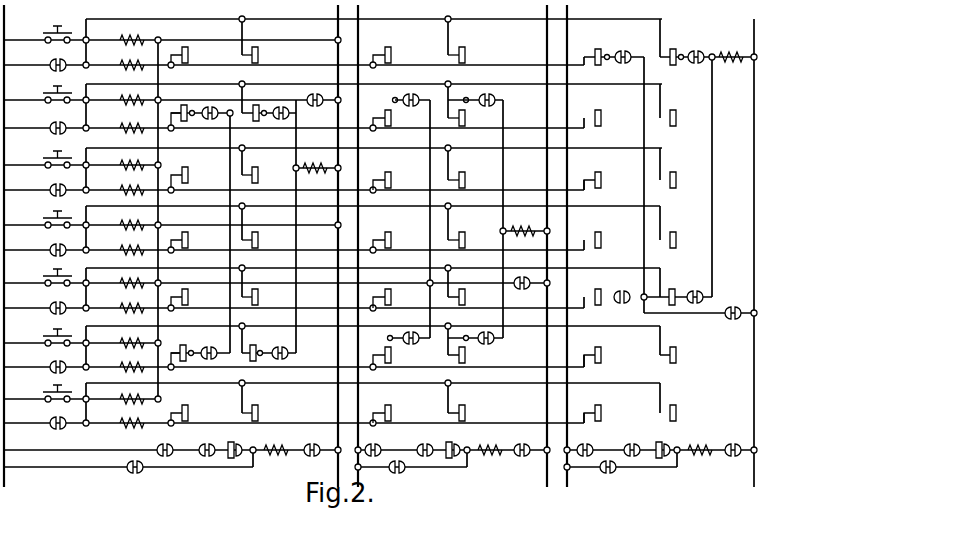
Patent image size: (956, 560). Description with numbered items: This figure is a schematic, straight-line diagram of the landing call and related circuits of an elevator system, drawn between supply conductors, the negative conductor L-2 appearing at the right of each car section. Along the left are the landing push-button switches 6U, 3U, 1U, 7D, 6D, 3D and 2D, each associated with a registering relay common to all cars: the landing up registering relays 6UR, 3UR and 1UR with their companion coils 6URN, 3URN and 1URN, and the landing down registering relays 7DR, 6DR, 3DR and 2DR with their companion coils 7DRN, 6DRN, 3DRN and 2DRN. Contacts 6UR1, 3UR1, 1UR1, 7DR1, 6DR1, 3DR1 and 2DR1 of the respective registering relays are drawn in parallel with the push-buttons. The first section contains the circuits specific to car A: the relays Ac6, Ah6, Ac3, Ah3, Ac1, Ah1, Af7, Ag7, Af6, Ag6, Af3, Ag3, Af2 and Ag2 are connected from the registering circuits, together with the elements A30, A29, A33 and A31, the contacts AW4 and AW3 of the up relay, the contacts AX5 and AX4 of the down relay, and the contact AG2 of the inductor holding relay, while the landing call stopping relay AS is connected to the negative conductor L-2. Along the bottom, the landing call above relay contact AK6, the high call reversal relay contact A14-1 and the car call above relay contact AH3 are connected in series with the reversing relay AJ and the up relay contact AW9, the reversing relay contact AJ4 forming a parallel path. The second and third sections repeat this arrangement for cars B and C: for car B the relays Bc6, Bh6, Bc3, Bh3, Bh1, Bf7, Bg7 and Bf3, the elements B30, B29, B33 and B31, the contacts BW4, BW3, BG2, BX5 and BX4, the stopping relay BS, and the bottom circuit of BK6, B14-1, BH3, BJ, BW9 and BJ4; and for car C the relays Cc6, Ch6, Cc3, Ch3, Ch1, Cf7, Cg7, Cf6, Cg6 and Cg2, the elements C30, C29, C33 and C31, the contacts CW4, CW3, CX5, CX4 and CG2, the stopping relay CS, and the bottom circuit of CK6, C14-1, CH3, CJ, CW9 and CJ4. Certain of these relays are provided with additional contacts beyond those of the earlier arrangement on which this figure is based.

The negative supply line L-2 is at (525, 9).
The pushbutton switch 6U is at (49, 29).
The contact of landing up registering relay 6UR 6UR1 is at (37, 57).
The landing up registering relay 6UR is at (142, 37).
The relay coil 6URN is at (117, 58).
The relay coil Ac6 is at (195, 55).
The relay coil Ah6 is at (266, 54).
The pushbutton switch 3U is at (50, 90).
The contact of landing up registering relay 3UR 3UR1 is at (37, 120).
The landing up registering relay 3UR is at (117, 95).
The relay coil 3URN is at (117, 121).
The relay coil Ac3 is at (174, 110).
The terminal A30 is at (191, 121).
The contact of up relay AW AW4 is at (218, 103).
The relay coil Ah3 is at (262, 104).
The terminal A29 is at (263, 121).
The contact of up relay AW AW3 is at (301, 117).
The contact of inductor holding relay AG AG2 is at (310, 93).
The pushbutton switch 1U is at (51, 154).
The contact of landing up registering relay 1UR 1UR1 is at (36, 183).
The landing up registering relay 1UR is at (118, 160).
The relay coil 1URN is at (117, 184).
The relay coil Ac1 is at (175, 173).
The relay coil Ah1 is at (258, 169).
The landing call stopping relay AS is at (317, 178).
The pushbutton switch 7D is at (50, 214).
The contact of landing down registering relay 7DR 7DR1 is at (37, 243).
The landing down registering relay 7DR is at (117, 220).
The relay coil 7DRN is at (117, 244).
The relay coil Af7 is at (192, 241).
The relay coil Ag7 is at (266, 240).
The pushbutton switch 6D is at (49, 273).
The contact of landing down registering relay 6DR 6DR1 is at (37, 302).
The landing down registering relay 6DR is at (117, 278).
The relay coil 6DRN is at (117, 302).
The relay coil Af6 is at (194, 293).
The relay coil Ag6 is at (265, 291).
The pushbutton switch 3D is at (50, 332).
The contact of landing down registering relay 3DR 3DR1 is at (37, 360).
The landing down registering relay 3DR is at (117, 338).
The relay coil 3DRN is at (117, 361).
The relay coil Af3 is at (174, 349).
The contact A33 is at (205, 345).
The contact of down relay AX AX5 is at (200, 358).
The relay coil Ag3 is at (259, 346).
The terminal A31 is at (261, 357).
The contact of down relay AX AX4 is at (299, 357).
The pushbutton switch 2D is at (49, 389).
The contact of landing down registering relay 2DR 2DR1 is at (36, 417).
The landing down registering relay 2DR is at (117, 394).
The relay coil 2DRN is at (117, 417).
The relay coil Af2 is at (192, 406).
The relay coil Ag2 is at (264, 405).
The contact of landing call above relay AK AK6 is at (158, 445).
The contact of high call reversal relay A14 A14-1 is at (193, 442).
The contact of car call above relay AH AH3 is at (247, 443).
The reversing relay AJ is at (270, 455).
The contact of up relay AW AW9 is at (317, 441).
The contact of reversing relay AJ AJ4 is at (128, 465).
The relay coil Bc6 is at (396, 50).
The relay coil Bh6 is at (470, 39).
The terminal B30 is at (395, 99).
The contact BW4 is at (420, 88).
The terminal B29 is at (454, 90).
The contact BW3 is at (495, 100).
The relay coil Bc3 is at (396, 120).
The relay coil Bh3 is at (471, 119).
The relay coil Bh1 is at (470, 166).
The relay coil Bf7 is at (395, 234).
The relay coil Bg7 is at (470, 225).
The resistor BS is at (525, 239).
The contact BG2 is at (488, 291).
The relay coil Bf3 is at (375, 351).
The terminal B33 is at (386, 334).
The contact BX5 is at (410, 342).
The terminal B31 is at (463, 334).
The contact BX4 is at (494, 343).
The contact BK6 is at (370, 442).
The contact B14-1 is at (422, 442).
The relay coil BH3 is at (452, 448).
The resistor BJ is at (484, 456).
The contact BW9 is at (528, 442).
The contact BJ4 is at (395, 475).
The relay coil Cc6 is at (595, 50).
The terminal C30 is at (604, 59).
The contact CW4 is at (626, 48).
The relay coil Ch6 is at (670, 44).
The terminal C29 is at (680, 60).
The contact CW3 is at (685, 51).
The resistor CS is at (748, 38).
The relay coil Cc3 is at (602, 112).
The relay coil Ch3 is at (677, 112).
The relay coil Ch1 is at (689, 180).
The relay coil Cf7 is at (600, 238).
The relay coil Cg7 is at (677, 236).
The relay coil Cf6 is at (595, 295).
The contact C33 is at (610, 294).
The junction CX5 is at (616, 301).
The relay coil Cg6 is at (668, 291).
The contact C31 is at (681, 295).
The junction CX4 is at (705, 300).
The contact CG2 is at (730, 319).
The relay coil Cg2 is at (677, 409).
The contact CK6 is at (579, 442).
The contact C14-1 is at (629, 442).
The relay coil CH3 is at (662, 448).
The resistor CJ is at (694, 456).
The contact CW9 is at (736, 442).
The contact CJ4 is at (608, 475).